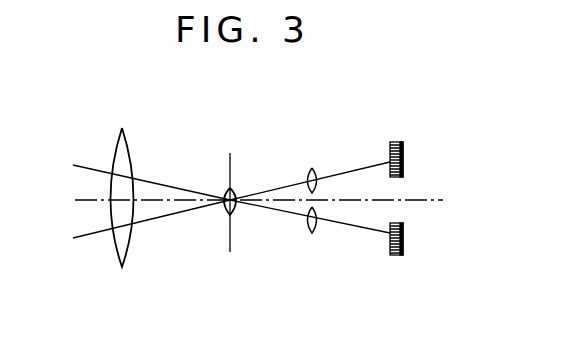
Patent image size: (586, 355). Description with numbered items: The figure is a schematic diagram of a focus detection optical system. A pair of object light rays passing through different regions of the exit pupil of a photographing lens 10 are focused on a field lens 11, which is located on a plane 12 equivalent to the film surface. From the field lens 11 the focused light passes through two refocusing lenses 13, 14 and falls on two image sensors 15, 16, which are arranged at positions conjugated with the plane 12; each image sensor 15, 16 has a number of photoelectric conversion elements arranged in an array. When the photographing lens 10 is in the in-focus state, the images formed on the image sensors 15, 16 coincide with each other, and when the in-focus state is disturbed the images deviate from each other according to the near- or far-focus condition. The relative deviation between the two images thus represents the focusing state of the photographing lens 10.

The photographing lens 10 is at (128, 142).
The field lens 11 is at (235, 190).
The plane equivalent to a film surface 12 is at (231, 160).
The refocusing lens 13 is at (313, 170).
The refocusing lens 14 is at (313, 232).
The image sensor 15 is at (403, 155).
The image sensor 16 is at (404, 233).